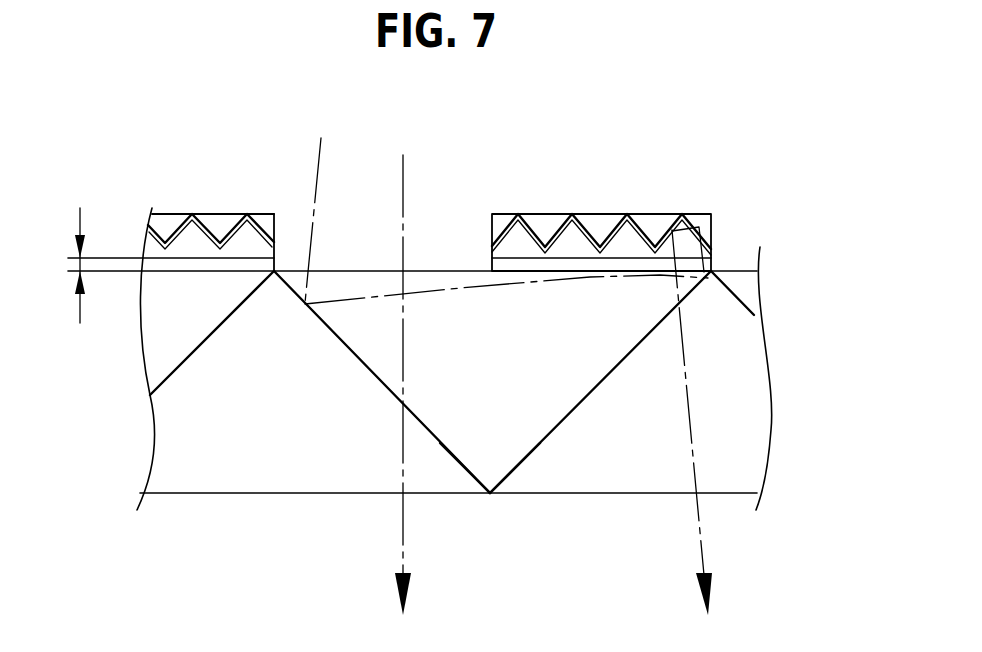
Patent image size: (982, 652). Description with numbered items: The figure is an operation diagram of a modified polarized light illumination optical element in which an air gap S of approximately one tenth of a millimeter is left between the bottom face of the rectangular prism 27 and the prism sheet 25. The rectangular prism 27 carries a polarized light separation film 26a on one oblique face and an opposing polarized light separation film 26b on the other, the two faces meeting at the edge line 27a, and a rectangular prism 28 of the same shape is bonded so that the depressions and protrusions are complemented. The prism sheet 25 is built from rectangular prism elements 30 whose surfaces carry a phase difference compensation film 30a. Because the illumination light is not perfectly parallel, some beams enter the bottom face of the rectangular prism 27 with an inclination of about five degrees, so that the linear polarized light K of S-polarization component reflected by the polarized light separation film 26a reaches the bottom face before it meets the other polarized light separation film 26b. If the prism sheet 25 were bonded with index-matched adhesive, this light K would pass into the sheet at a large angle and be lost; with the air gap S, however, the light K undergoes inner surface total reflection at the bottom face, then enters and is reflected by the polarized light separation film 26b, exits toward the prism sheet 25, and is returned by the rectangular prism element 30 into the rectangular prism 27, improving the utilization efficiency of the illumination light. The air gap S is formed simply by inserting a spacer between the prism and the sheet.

The prism sheet 25 is at (718, 222).
The polarized light separation film 26a is at (350, 352).
The other polarized light separation film 26b is at (593, 392).
The rectangular prism 27 is at (522, 432).
The edge line 27a is at (490, 494).
The rectangular prism 28 is at (762, 458).
The rectangular prism element 30 is at (535, 214).
The phase difference compensation film 30a is at (645, 214).
The linear polarized light of S-polarization component K is at (497, 288).
The air gap S is at (61, 265).